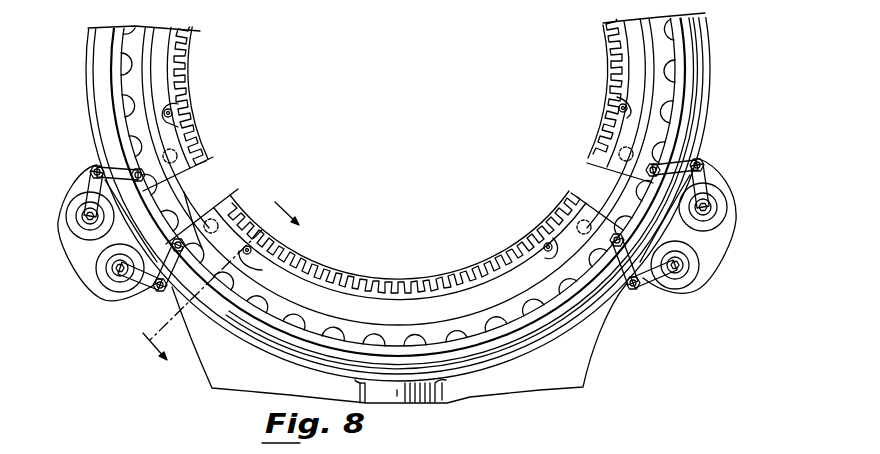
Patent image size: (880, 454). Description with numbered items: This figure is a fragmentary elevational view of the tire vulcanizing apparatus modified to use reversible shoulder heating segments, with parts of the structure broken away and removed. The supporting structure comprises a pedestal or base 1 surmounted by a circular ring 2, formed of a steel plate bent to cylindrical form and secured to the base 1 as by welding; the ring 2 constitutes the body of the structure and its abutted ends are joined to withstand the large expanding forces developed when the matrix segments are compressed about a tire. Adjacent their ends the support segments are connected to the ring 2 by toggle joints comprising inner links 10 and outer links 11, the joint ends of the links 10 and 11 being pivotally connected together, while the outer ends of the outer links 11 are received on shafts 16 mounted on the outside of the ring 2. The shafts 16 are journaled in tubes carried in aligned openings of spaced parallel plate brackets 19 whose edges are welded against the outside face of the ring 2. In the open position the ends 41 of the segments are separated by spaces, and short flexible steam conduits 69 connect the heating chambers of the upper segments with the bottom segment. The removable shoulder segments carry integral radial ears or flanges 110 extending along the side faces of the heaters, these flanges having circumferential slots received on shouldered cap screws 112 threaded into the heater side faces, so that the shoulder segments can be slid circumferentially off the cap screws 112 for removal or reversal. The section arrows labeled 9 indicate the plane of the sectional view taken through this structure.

The pedestal or base 1 is at (577, 358).
The circular ring 2 is at (88, 86).
The section line 9- 9 is at (220, 282).
The inner links 10 is at (114, 168).
The outer links 11 is at (91, 183).
The shafts 16 is at (75, 228).
The plate brackets 19 is at (80, 263).
The ends of the segments 41 is at (587, 163).
The flexible steam conduits 69 is at (187, 200).
The radial ears or flanges 110 is at (252, 262).
The shouldered cap screws 112 is at (255, 249).